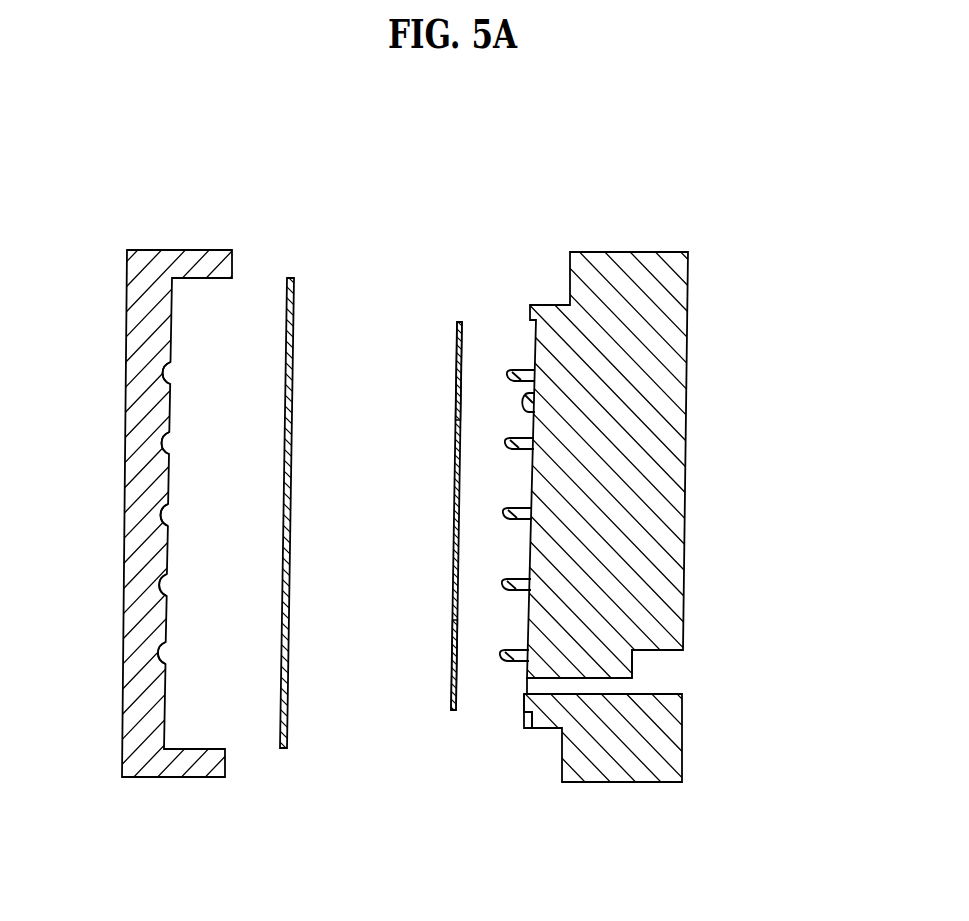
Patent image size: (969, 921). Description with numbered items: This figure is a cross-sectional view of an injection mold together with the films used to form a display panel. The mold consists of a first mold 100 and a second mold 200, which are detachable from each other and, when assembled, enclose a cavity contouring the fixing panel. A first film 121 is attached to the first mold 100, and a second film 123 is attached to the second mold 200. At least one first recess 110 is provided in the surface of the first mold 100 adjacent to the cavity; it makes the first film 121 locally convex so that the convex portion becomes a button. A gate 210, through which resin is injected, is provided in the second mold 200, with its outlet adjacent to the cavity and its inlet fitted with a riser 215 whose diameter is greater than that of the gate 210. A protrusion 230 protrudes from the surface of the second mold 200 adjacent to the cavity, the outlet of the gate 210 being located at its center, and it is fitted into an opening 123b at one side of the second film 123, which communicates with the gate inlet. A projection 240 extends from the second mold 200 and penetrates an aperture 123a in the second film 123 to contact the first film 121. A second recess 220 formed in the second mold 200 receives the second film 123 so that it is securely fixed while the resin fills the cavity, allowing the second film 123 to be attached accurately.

The first mold 100 is at (189, 262).
The first recess 110 is at (165, 440).
The first film 121 is at (290, 278).
The second film 123 is at (458, 320).
The aperture 123a is at (457, 378).
The opening 123b is at (450, 690).
The second mold 200 is at (636, 262).
The gate 210 is at (585, 688).
The riser 215 is at (676, 668).
The second recess 220 is at (527, 398).
The protrusion 230 is at (523, 701).
The projection 240 is at (513, 516).